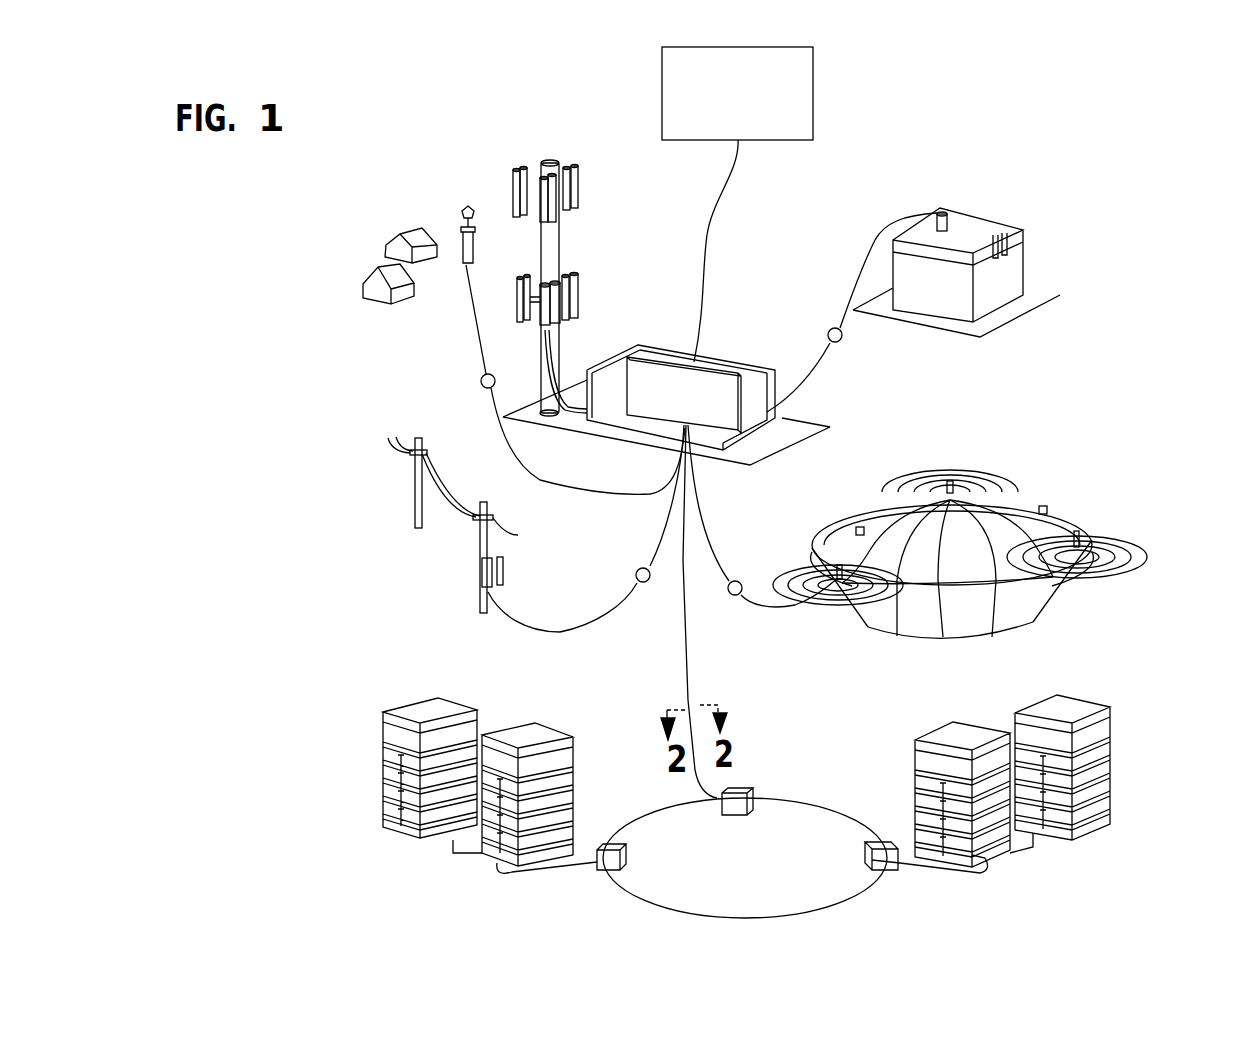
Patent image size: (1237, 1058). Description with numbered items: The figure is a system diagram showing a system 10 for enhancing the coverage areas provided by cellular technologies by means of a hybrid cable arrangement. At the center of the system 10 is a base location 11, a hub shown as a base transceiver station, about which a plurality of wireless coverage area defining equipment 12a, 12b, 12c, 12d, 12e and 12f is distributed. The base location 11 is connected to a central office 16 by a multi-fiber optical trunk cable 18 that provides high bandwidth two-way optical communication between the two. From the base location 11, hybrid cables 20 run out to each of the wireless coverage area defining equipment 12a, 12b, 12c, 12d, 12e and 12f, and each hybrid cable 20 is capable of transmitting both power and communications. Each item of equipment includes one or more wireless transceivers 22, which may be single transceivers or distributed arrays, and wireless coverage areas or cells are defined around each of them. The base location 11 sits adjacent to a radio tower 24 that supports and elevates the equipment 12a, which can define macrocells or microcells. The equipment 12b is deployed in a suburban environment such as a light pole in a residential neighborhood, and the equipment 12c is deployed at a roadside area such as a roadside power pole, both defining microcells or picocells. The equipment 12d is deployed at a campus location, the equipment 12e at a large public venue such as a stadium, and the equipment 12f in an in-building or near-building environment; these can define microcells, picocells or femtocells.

The system 10 is at (977, 82).
The base location 11 is at (738, 358).
The wireless coverage area defining equipment 12a is at (578, 297).
The wireless coverage area defining equipment 12b is at (460, 227).
The wireless coverage area defining equipment 12c is at (505, 565).
The wireless coverage area defining equipment 12d is at (570, 790).
The wireless coverage area defining equipment 12e is at (860, 527).
The wireless coverage area defining equipment 12f is at (945, 212).
The central office 16 is at (815, 68).
The multi-fiber optical trunk cable 18 is at (712, 228).
The hybrid cables 20 is at (560, 237).
The wireless transceiver 22 is at (950, 222).
The radio tower 24 is at (542, 247).